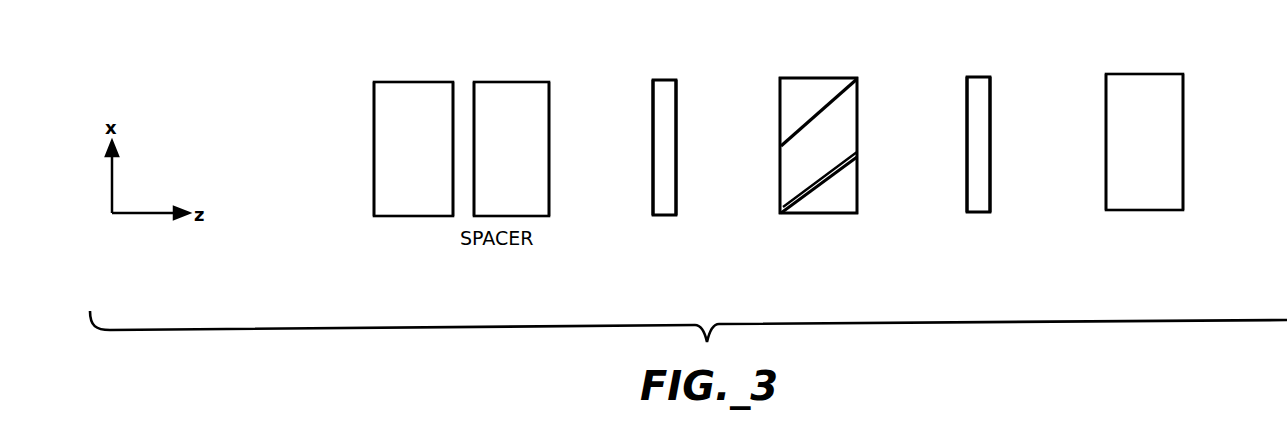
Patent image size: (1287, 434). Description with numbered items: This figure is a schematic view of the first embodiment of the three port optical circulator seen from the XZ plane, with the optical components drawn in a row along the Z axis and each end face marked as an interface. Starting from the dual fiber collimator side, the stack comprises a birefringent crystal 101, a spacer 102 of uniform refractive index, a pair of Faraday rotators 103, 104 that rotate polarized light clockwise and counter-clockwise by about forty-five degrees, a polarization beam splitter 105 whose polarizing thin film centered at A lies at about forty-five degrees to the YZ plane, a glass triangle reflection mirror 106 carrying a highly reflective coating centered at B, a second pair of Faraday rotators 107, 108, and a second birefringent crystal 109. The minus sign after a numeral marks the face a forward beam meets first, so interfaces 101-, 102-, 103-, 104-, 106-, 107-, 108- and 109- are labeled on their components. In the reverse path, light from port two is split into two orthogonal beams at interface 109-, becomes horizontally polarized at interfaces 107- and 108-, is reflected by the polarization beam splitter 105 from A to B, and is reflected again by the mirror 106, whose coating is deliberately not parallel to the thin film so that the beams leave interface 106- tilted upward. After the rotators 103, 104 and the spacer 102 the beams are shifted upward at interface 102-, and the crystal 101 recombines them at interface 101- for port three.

The birefringent crystal 101 is at (375, 132).
The interface of component 101 first met in the forward direction 101- is at (374, 108).
The spacer 102 is at (554, 130).
The interface of spacer 102 first met in the forward direction 102- is at (473, 106).
The Faraday rotator 103 is at (670, 167).
The interface of Faraday rotator 103 first met in the forward direction 103- is at (653, 200).
The Faraday rotator 104 is at (670, 179).
The interface of Faraday rotator 104 first met in the forward direction 104- is at (613, 179).
The polarization beam splitter 105 is at (856, 125).
The glass triangle reflection mirror 106 is at (824, 166).
The interface of glass triangle 106 first met in the forward direction 106- is at (805, 205).
The Faraday rotator 107 is at (985, 165).
The interface of Faraday rotator 107 first met in the forward direction 107- is at (967, 197).
The Faraday rotator 108 is at (985, 177).
The interface of Faraday rotator 108 first met in the forward direction 108- is at (927, 177).
The birefringent crystal 109 is at (1149, 131).
The interface of crystal 109 first met in the forward direction 109- is at (1106, 101).